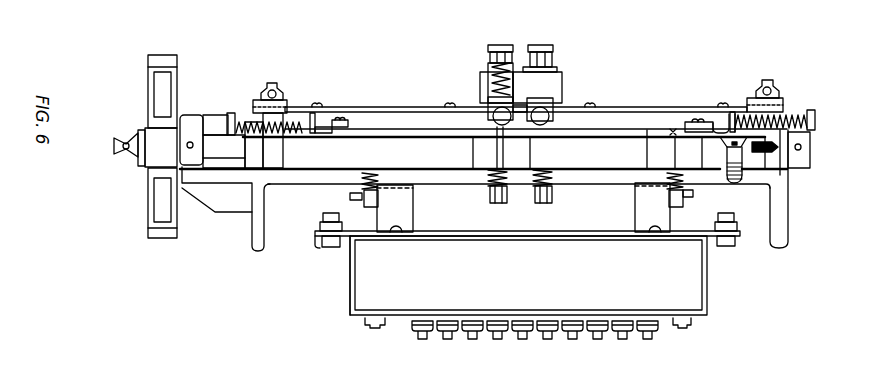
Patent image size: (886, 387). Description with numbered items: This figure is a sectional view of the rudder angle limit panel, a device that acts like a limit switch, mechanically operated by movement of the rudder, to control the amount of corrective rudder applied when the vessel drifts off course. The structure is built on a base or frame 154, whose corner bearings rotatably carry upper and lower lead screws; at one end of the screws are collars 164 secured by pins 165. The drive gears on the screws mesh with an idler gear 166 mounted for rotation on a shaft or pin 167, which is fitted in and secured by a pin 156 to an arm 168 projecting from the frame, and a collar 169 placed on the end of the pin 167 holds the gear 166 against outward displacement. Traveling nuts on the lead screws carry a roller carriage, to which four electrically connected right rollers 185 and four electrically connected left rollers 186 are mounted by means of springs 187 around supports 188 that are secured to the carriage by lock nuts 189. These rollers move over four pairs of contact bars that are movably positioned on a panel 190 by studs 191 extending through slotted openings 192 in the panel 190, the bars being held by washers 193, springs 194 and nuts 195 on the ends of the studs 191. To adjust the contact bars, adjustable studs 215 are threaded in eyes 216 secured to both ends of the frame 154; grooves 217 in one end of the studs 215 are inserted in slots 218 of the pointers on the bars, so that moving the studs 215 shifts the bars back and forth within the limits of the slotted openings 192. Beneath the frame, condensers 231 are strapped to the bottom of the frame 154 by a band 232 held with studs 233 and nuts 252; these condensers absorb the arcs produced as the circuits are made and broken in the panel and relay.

The base or frame 154 is at (789, 206).
The pin 156 is at (191, 142).
The collars 164 is at (808, 162).
The pins 165 is at (802, 147).
The idler gear 166 is at (148, 207).
The shaft or pin 167 is at (200, 156).
The arm 168 is at (226, 209).
The collar 169 is at (142, 172).
The right rollers 185 is at (558, 128).
The left rollers 186 is at (492, 124).
The springs 187 is at (492, 83).
The supports 188 is at (495, 60).
The lock nuts 189 is at (531, 47).
The panel 190 is at (483, 149).
The studs 191 is at (498, 157).
The slotted openings 192 is at (655, 152).
The washers 193 is at (488, 178).
The springs 194 is at (494, 202).
The nuts 195 is at (546, 202).
The adjustable studs 215 is at (237, 117).
The eyes 216 is at (277, 131).
The grooves 217 is at (304, 134).
The slots 218 is at (516, 87).
The condensers 231 is at (528, 275).
The band 232 is at (350, 296).
The studs 233 is at (336, 250).
The nuts 252 is at (320, 219).